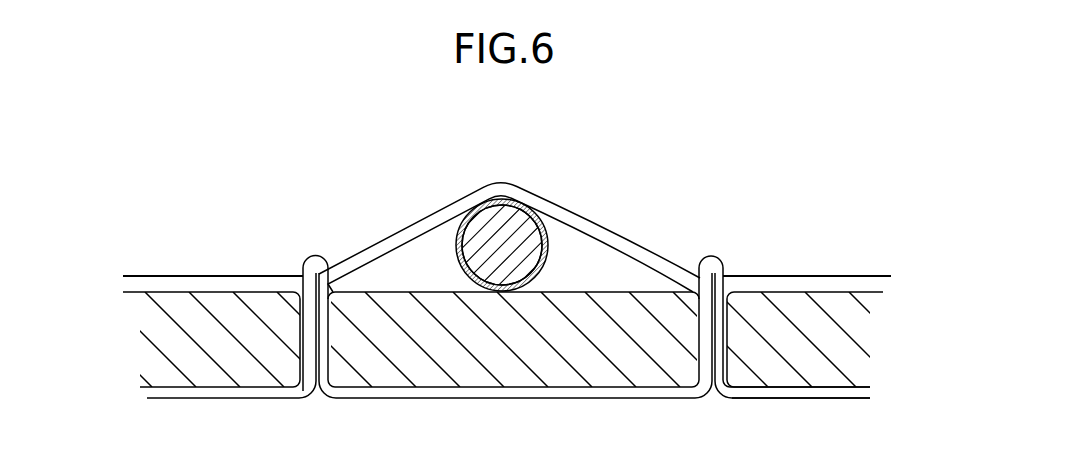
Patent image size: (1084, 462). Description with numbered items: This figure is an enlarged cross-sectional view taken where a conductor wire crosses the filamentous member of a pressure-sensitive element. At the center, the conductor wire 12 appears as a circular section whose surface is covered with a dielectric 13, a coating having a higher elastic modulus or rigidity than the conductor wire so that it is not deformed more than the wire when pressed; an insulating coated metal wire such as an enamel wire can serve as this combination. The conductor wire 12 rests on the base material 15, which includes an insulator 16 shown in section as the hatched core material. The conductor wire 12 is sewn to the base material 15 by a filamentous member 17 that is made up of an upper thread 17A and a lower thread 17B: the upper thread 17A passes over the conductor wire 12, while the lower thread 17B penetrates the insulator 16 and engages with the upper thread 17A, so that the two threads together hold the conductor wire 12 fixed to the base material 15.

The conductor wire 12 is at (545, 258).
The dielectric 13 is at (543, 231).
The base material 15 is at (114, 316).
The insulator 16 is at (863, 329).
The filamentous member 17 is at (622, 245).
The upper thread 17A is at (863, 284).
The lower thread 17B is at (863, 392).